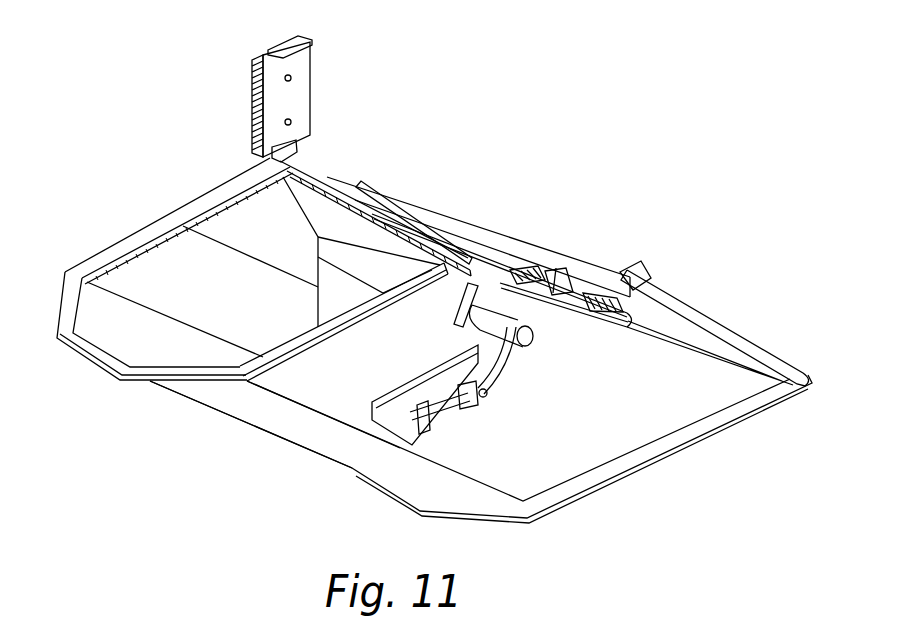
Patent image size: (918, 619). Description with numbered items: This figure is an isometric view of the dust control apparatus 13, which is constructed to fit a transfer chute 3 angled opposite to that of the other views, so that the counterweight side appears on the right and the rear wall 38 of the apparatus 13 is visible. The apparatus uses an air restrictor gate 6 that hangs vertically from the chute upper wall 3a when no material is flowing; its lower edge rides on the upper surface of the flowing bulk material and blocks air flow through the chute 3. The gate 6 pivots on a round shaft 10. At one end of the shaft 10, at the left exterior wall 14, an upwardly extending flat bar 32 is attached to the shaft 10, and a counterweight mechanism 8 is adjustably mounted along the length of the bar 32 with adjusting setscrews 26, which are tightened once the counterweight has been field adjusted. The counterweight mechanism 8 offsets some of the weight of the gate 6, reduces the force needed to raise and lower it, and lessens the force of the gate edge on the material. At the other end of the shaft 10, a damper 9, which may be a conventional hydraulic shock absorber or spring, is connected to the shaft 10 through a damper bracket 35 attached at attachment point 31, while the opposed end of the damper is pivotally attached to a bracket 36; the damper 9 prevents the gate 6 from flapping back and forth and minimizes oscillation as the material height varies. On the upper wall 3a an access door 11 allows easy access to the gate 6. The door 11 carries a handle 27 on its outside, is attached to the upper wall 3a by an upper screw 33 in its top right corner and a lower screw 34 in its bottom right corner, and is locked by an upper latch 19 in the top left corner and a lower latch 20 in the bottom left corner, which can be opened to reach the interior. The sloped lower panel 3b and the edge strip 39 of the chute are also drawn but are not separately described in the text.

The transfer chute 3 is at (151, 282).
The chute upper wall 3a is at (697, 342).
The front wall panel 3b is at (250, 402).
The air restrictor gate 6 is at (335, 301).
The counterweight mechanism 8 is at (239, 103).
The damper 9 is at (466, 422).
The round shaft 10 is at (490, 300).
The access door 11 is at (487, 244).
The dust control apparatus 13 is at (590, 156).
The left exterior wall 14 is at (700, 397).
The upper latch 19 is at (521, 272).
The lower latch 20 is at (591, 296).
The adjusting setscrews 26 is at (291, 119).
The handle 27 is at (558, 270).
The attachment point 31 is at (520, 316).
The flat bar 32 is at (277, 45).
The upper screw 33 is at (380, 192).
The lower screw 34 is at (456, 220).
The damper bracket 35 is at (495, 345).
The bracket 36 is at (371, 432).
The rear wall 38 is at (293, 438).
The edge bar 39 is at (641, 295).